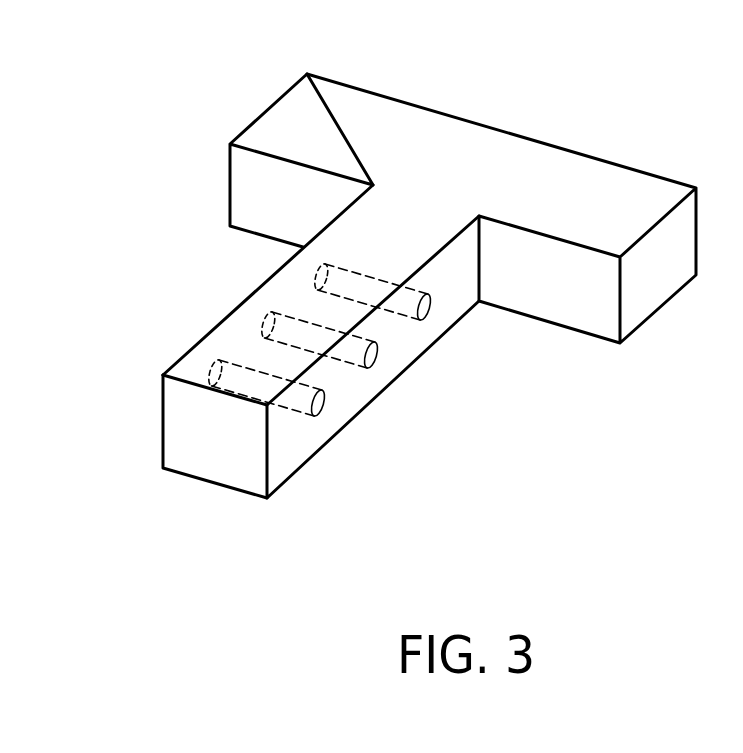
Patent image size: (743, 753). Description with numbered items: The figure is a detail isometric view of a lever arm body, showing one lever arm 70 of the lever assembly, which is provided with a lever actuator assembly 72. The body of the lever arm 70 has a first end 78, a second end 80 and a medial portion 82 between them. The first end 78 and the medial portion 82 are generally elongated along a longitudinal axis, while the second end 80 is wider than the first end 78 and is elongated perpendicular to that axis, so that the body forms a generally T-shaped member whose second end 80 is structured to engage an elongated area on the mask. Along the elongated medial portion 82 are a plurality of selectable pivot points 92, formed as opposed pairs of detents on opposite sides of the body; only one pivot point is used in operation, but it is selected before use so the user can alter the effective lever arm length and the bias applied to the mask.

The lever arm 70 is at (372, 393).
The lever actuator assembly 72 is at (415, 342).
The lever arm body first end 78 is at (208, 482).
The lever arm body second end 80 is at (495, 130).
The lever arm body medial portion 82 is at (285, 261).
The selectable pivot points 92 is at (432, 310).